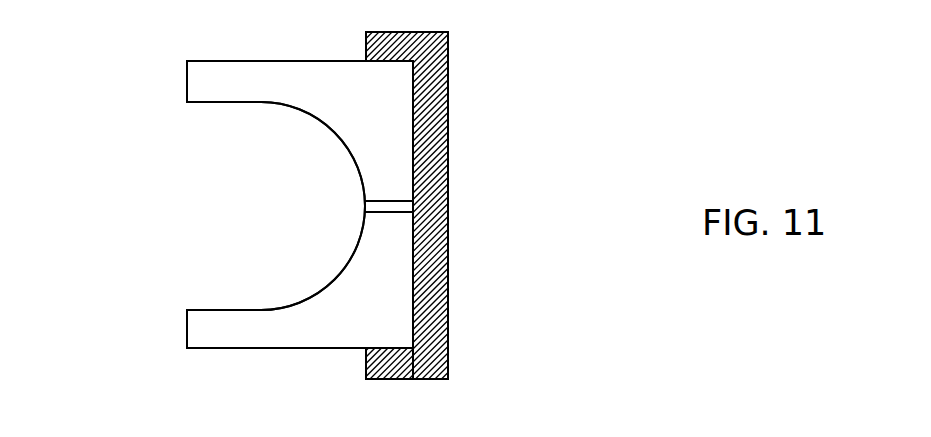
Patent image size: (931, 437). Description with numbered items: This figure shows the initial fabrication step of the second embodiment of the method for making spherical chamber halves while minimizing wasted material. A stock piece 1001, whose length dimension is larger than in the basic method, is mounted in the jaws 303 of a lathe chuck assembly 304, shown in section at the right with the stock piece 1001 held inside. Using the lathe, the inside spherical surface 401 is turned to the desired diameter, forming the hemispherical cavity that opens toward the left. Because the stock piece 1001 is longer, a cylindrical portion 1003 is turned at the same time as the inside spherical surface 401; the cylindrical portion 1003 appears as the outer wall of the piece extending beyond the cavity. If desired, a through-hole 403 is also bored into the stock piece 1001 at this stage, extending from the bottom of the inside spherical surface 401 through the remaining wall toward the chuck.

The stock piece 1001 is at (317, 80).
The cylindrical portion 1003 is at (217, 114).
The inside spherical surface 401 is at (337, 141).
The through-hole 403 is at (364, 208).
The lathe chuck assembly 304 is at (448, 304).
The jaws 303 is at (383, 363).